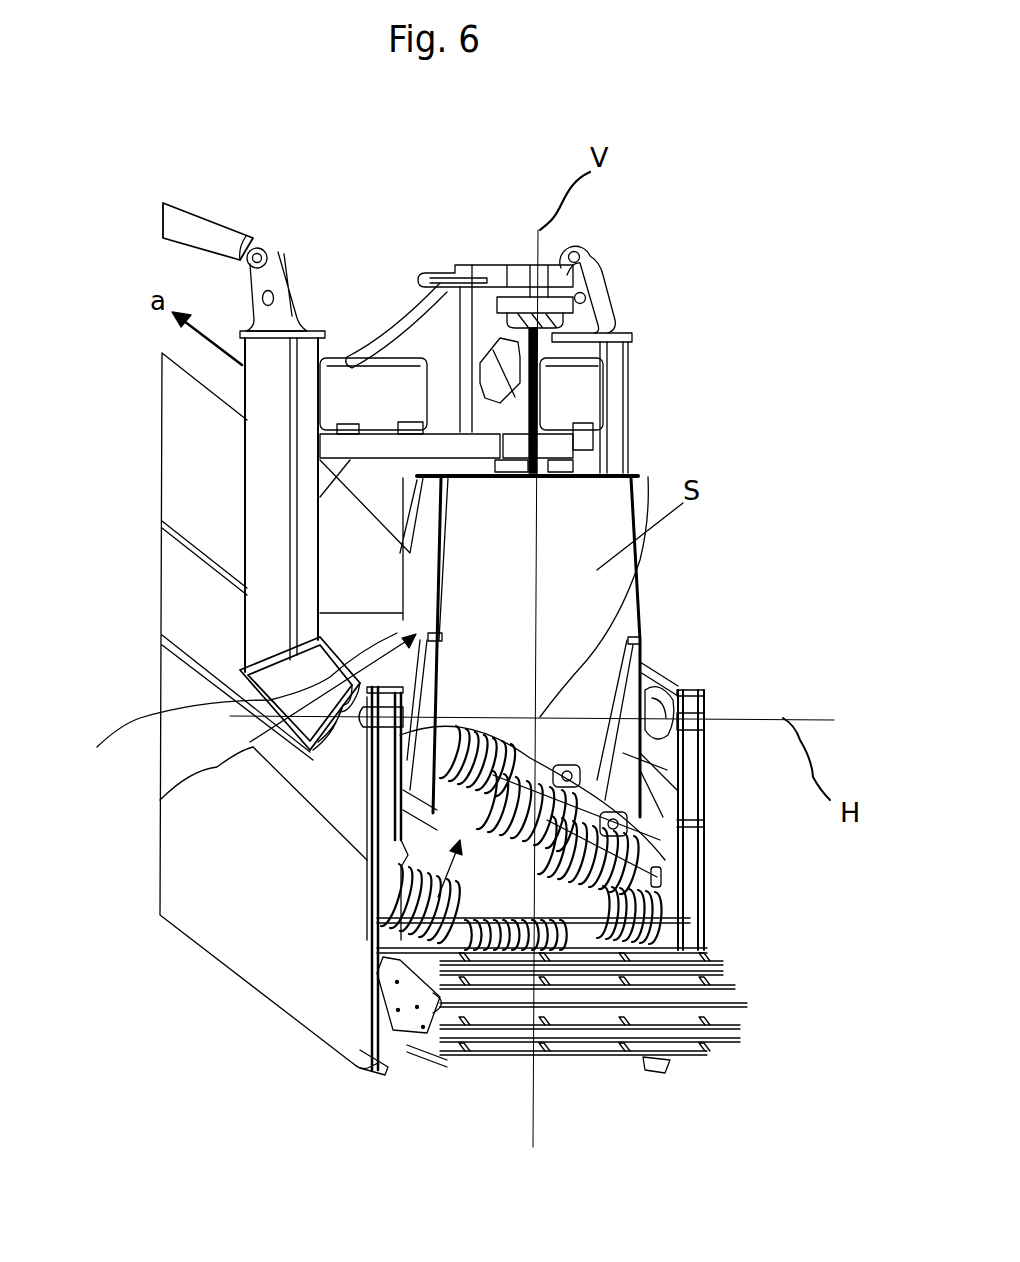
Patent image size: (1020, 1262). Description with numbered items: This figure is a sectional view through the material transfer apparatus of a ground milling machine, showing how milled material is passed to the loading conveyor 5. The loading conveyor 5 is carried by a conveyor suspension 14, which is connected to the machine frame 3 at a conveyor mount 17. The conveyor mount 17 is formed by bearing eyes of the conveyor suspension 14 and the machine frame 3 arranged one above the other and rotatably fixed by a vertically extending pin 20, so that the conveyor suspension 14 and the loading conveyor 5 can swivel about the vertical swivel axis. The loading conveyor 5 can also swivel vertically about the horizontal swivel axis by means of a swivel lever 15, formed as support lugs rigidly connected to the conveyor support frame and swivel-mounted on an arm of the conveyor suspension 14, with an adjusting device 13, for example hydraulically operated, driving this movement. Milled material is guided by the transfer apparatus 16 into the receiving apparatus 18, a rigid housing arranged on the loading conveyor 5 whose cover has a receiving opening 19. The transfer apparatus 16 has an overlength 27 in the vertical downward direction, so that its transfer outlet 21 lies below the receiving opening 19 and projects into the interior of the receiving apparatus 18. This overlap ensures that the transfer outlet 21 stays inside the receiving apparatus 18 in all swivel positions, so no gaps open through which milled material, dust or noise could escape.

The machine frame 3 is at (560, 470).
The loading conveyor 5 is at (171, 485).
The adjusting device 13 is at (195, 220).
The conveyor suspension 14 is at (387, 382).
The swivel lever 15 is at (323, 777).
The transfer apparatus 16 is at (633, 503).
The conveyor mount 17 is at (581, 280).
The receiving apparatus 18 is at (231, 708).
The receiving opening 19 is at (250, 742).
The pin 20 is at (543, 282).
The transfer outlet 21 is at (440, 1065).
The overlength 27 is at (367, 860).